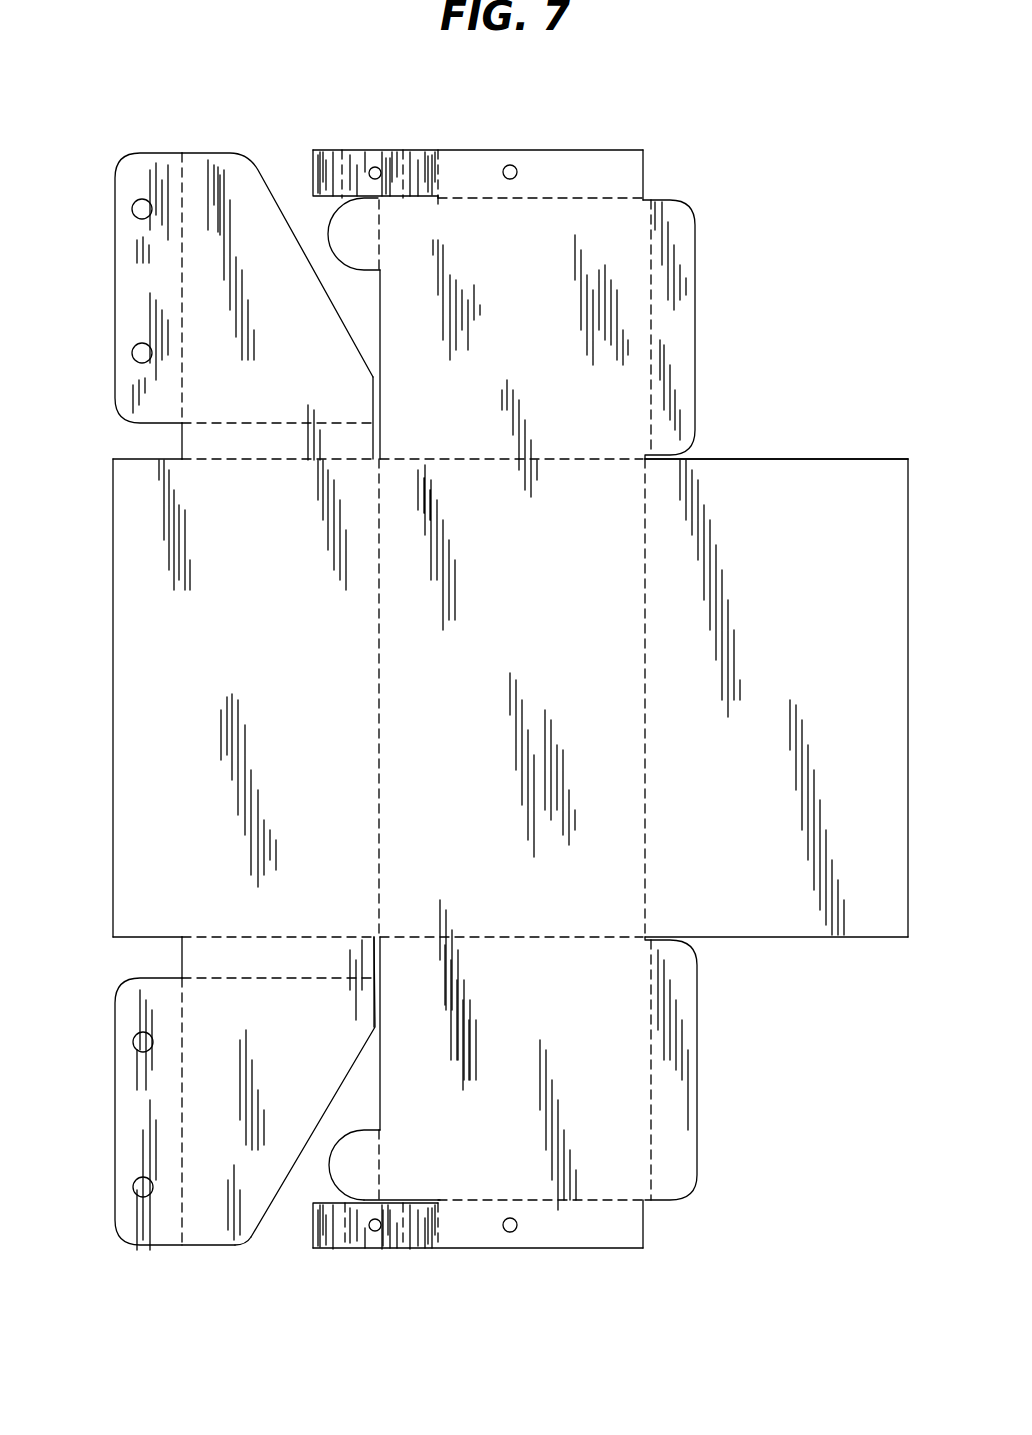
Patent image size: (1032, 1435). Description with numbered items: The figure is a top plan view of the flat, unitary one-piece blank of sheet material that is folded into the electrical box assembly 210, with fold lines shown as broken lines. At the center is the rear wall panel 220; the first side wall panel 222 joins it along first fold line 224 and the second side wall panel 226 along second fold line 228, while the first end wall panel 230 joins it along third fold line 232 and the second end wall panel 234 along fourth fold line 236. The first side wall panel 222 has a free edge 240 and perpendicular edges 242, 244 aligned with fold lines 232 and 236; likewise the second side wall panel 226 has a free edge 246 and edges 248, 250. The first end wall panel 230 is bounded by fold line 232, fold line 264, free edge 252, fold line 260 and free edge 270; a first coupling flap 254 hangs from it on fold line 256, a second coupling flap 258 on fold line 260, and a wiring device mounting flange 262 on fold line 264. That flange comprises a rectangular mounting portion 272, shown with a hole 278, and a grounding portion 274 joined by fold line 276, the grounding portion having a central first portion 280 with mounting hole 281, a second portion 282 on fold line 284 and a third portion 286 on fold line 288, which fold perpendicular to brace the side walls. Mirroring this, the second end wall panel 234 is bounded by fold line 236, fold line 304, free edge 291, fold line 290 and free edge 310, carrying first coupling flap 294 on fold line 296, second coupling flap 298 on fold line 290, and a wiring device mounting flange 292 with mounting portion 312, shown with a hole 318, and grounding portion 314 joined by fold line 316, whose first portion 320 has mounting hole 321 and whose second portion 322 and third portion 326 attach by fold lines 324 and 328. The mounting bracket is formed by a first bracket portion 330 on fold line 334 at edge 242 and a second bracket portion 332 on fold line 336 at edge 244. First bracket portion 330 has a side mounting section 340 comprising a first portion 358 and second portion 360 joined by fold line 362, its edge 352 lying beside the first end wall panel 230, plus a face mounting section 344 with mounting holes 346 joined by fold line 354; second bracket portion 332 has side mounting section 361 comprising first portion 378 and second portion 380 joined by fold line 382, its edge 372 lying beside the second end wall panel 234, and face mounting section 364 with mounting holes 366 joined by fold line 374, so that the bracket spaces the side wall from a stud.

The electrical box assembly 210 is at (787, 285).
The rear wall panel 220 is at (535, 648).
The first side wall panel 222 is at (267, 648).
The first fold line 224 is at (381, 672).
The second side wall panel 226 is at (810, 648).
The second fold line 228 is at (645, 672).
The first end wall panel 230 is at (535, 315).
The third fold line 232 is at (447, 459).
The second end wall panel 234 is at (543, 1033).
The fourth fold line 236 is at (503, 940).
The free edge 240 is at (113, 690).
The edge 242 is at (182, 462).
The edge 244 is at (150, 936).
The free edge 246 is at (905, 690).
The edge 248 is at (766, 459).
The edge 250 is at (860, 938).
The free edge 252 is at (438, 204).
The first coupling flap 254 is at (322, 228).
The fold line 256 is at (379, 240).
The second coupling flap 258 is at (697, 280).
The fold line 260 is at (648, 385).
The wiring device mounting flange 262 is at (652, 175).
The fold line 264 is at (515, 200).
The free edge 270 is at (367, 340).
The mounting portion 272 is at (613, 188).
The grounding portion 274 is at (311, 158).
The fold line 276 is at (445, 165).
The hole 278 is at (516, 167).
The first portion 280 is at (386, 150).
The mounting hole 281 is at (378, 179).
The second portion 282 is at (328, 150).
The fold line 284 is at (342, 150).
The third portion 286 is at (431, 150).
The fold line 288 is at (403, 150).
The fold line 290 is at (651, 1045).
The free edge 291 is at (410, 1200).
The wiring device mounting flange 292 is at (649, 1227).
The first coupling flap 294 is at (329, 1165).
The fold line 296 is at (379, 1160).
The second coupling flap 298 is at (699, 1060).
The fold line 304 is at (487, 1198).
The free edge 310 is at (381, 1063).
The mounting portion 312 is at (605, 1241).
The grounding portion 314 is at (343, 1250).
The fold line 316 is at (440, 1228).
The hole 318 is at (513, 1232).
The first portion 320 is at (372, 1231).
The mounting hole 321 is at (379, 1231).
The second portion 322 is at (313, 1247).
The fold line 324 is at (345, 1250).
The third portion 326 is at (413, 1243).
The fold line 328 is at (408, 1250).
The first bracket portion 330 is at (142, 135).
The second bracket portion 332 is at (215, 1256).
The fold line 334 is at (265, 460).
The fold line 336 is at (270, 937).
The first side mounting section 340 is at (214, 150).
The face mounting section 344 is at (112, 170).
The mounting holes 346 is at (134, 213).
The edge of panel 352 is at (381, 350).
The fold line 354 is at (182, 330).
The first portion 358 is at (278, 456).
The second portion 360 is at (303, 313).
The first side mounting section 361 is at (242, 1253).
The fold line 362 is at (250, 423).
The face mounting section 364 is at (118, 1240).
The mounting holes 366 is at (134, 1046).
The edge of flap 372 is at (381, 1015).
The fold line 374 is at (182, 1000).
The first portion 378 is at (251, 973).
The second portion 380 is at (318, 1078).
The fold line 382 is at (275, 978).